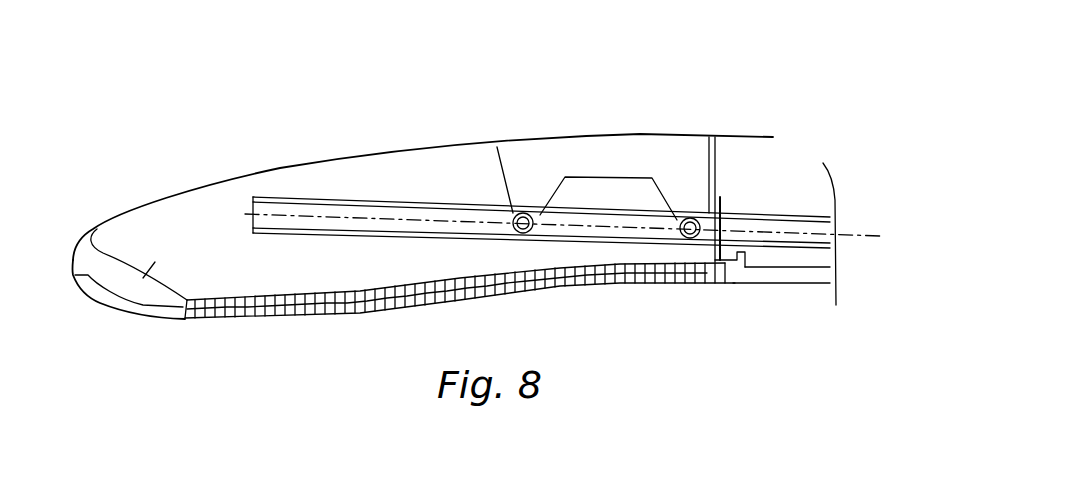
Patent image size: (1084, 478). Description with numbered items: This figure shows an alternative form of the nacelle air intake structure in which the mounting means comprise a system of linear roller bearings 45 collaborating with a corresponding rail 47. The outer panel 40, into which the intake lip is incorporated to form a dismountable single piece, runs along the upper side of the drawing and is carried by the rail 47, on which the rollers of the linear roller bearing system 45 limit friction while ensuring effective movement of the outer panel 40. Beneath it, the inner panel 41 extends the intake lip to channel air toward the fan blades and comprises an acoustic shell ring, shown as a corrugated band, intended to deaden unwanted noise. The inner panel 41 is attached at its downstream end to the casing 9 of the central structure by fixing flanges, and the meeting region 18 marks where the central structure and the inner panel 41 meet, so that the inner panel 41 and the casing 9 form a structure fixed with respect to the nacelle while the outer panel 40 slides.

The outer panel 40 is at (280, 168).
The rail 47 is at (353, 213).
The linear roller bearing system 45 is at (592, 163).
The inner panel 41 is at (355, 312).
The meeting region 18 is at (765, 296).
The casing 9 is at (805, 273).